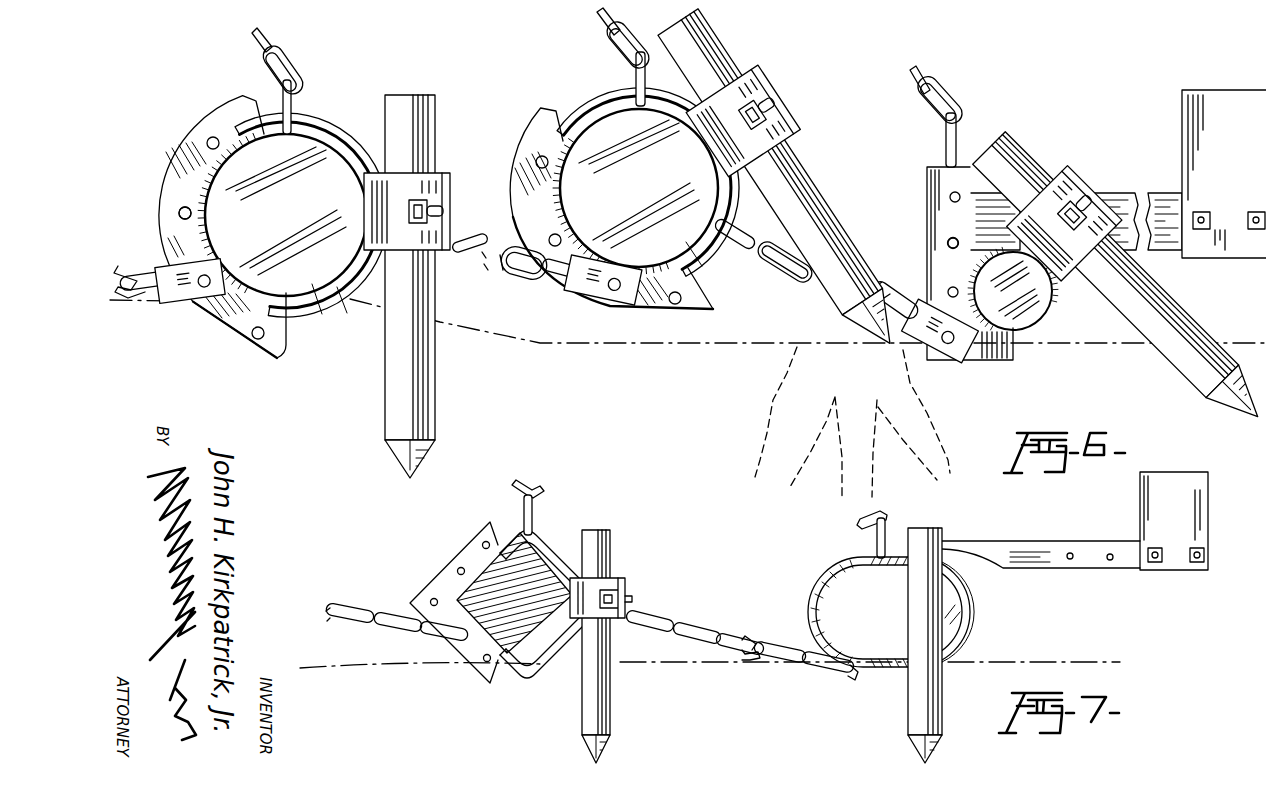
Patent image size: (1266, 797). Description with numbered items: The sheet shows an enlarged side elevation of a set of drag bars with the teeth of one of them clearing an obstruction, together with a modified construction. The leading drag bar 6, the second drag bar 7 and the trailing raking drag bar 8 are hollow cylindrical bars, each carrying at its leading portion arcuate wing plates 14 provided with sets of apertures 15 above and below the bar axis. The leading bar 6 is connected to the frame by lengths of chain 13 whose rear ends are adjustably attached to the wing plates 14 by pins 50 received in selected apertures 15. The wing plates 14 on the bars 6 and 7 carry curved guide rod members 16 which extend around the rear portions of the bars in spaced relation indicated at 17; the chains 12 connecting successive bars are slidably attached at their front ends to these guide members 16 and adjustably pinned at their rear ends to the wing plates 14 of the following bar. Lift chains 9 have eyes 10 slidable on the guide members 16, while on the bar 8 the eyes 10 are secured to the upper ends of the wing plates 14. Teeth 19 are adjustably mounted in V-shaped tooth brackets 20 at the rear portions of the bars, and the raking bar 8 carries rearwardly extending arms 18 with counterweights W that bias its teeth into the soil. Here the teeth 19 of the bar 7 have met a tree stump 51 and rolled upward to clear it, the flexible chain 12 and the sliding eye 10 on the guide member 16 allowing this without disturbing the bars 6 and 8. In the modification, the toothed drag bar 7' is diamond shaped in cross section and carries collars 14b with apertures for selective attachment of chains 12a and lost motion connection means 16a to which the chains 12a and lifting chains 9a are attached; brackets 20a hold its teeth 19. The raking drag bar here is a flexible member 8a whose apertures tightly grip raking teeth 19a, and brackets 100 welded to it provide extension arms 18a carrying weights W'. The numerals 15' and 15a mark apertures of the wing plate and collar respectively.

In FIG. 6, the leading drag bar 6 is at (312, 272).
In FIG. 6, the second drag bar 7 is at (603, 188).
In FIG. 7, the toothed drag bar 7' is at (520, 588).
In FIG. 6, the raking drag bar 8 is at (1052, 314).
In FIG. 7, the flexible member 8a is at (812, 580).
In FIG. 6, the lift chain 9 is at (290, 52).
In FIG. 7, the lifting chain 9a is at (540, 495).
In FIG. 6, the eye 10 is at (300, 103).
In FIG. 6, the chain 12 is at (528, 275).
In FIG. 7, the chain 12a is at (735, 637).
In FIG. 6, the chain 13 is at (140, 292).
In FIG. 6, the arcuate wing plate 14 is at (200, 118).
In FIG. 7, the collar 14b is at (445, 573).
In FIG. 6, the aperture 15 is at (537, 224).
In FIG. 6, the hole 15' is at (487, 267).
In FIG. 7, the hole 15a is at (485, 662).
In FIG. 6, the curved guide rod member 16 is at (340, 120).
In FIG. 7, the lost motion connection means 16a is at (542, 680).
In FIG. 6, the spaced relation 17 is at (347, 302).
In FIG. 6, the rearwardly extending arm 18 is at (1130, 192).
In FIG. 7, the extension arm 18a is at (1052, 541).
In FIG. 6, the tooth 19 is at (436, 116).
In FIG. 7, the tooth 19 is at (613, 555).
In FIG. 7, the raking tooth 19a is at (937, 530).
In FIG. 6, the V-shaped tooth bracket 20 is at (459, 189).
In FIG. 7, the bracket 20a is at (640, 597).
In FIG. 6, the pin 50 is at (203, 290).
In FIG. 6, the tree stump 51 is at (775, 400).
In FIG. 7, the bracket 100 is at (968, 617).
In FIG. 6, the counterweight W is at (1224, 150).
In FIG. 7, the weight W' is at (1174, 505).